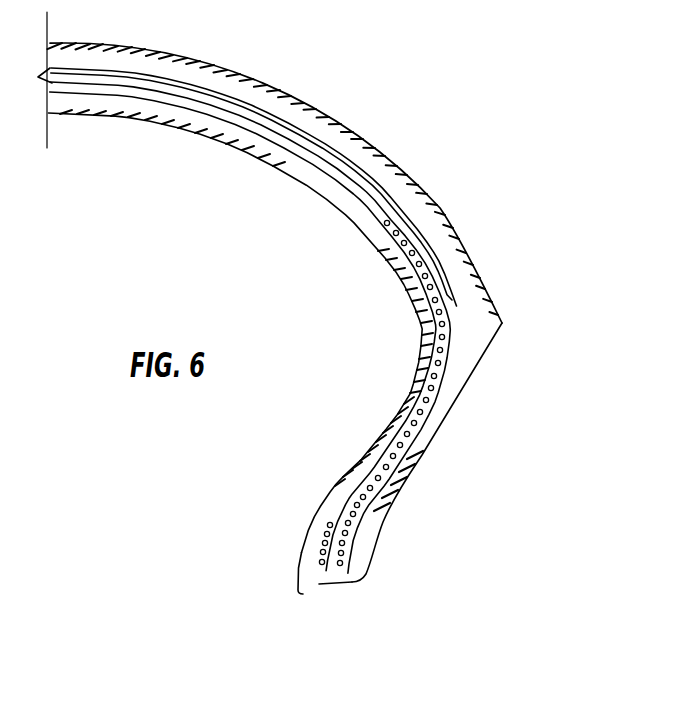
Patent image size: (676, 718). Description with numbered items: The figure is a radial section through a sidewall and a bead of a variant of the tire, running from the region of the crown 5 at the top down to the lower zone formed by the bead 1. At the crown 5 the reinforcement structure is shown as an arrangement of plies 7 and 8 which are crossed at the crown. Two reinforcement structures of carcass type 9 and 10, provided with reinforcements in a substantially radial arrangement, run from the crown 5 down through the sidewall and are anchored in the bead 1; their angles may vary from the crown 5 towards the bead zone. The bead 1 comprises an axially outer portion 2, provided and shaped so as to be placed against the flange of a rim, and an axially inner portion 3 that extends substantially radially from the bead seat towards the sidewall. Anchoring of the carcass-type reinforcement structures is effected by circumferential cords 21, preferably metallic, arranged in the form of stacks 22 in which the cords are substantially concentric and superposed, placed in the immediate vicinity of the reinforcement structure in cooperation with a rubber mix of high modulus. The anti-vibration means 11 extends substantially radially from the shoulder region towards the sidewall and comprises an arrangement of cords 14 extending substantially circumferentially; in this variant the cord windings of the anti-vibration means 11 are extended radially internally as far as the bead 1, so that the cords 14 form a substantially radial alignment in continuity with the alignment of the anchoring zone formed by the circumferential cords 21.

The bead 1 is at (309, 543).
The axially outer portion 2 is at (363, 552).
The axially inner portion 3 is at (308, 551).
The crown 5 is at (121, 66).
The ply 7 is at (364, 168).
The ply 8 is at (332, 152).
The reinforcement structure of carcass type 9 is at (308, 152).
The reinforcement structure of carcass type 10 is at (353, 202).
The anti-vibration means 11 is at (403, 440).
The cords 14 is at (441, 364).
The circumferential cords 21 is at (345, 543).
The stacks 22 is at (322, 573).